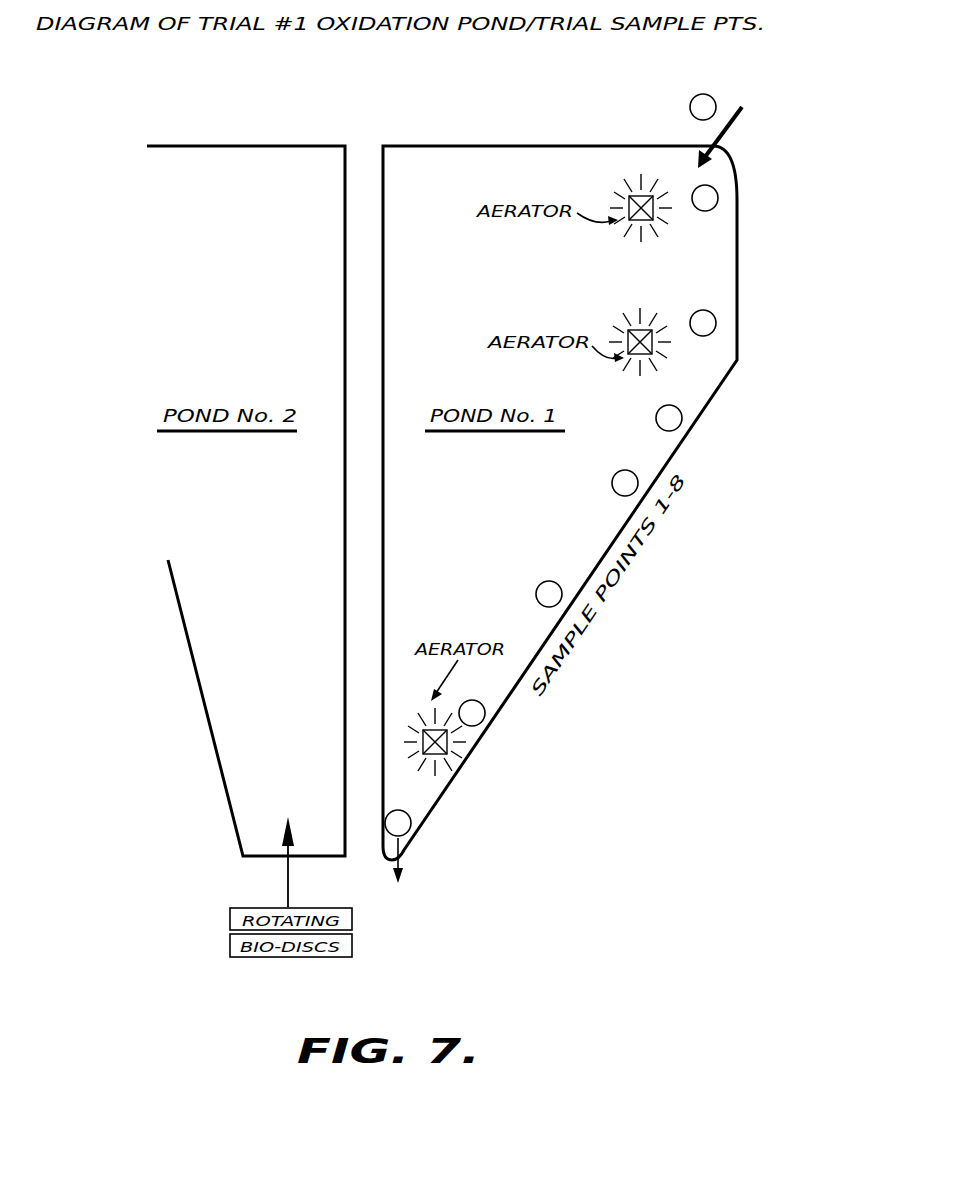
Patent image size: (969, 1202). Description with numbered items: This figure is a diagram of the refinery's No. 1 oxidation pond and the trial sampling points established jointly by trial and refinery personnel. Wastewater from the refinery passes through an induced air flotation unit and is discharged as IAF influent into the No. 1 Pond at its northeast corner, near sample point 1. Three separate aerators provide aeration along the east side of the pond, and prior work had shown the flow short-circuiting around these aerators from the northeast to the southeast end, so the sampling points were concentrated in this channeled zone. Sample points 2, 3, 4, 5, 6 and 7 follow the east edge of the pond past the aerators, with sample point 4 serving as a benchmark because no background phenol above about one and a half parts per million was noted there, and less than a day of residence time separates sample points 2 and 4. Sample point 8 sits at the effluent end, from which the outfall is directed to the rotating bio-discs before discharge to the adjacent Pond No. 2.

The sample point 1 is at (777, 124).
The sample point 2 is at (705, 198).
The sample point 3 is at (703, 323).
The sample point 4 is at (669, 418).
The sample point 5 is at (625, 483).
The sample point 6 is at (549, 594).
The sample point 7 is at (472, 713).
The sample point 8 is at (443, 857).